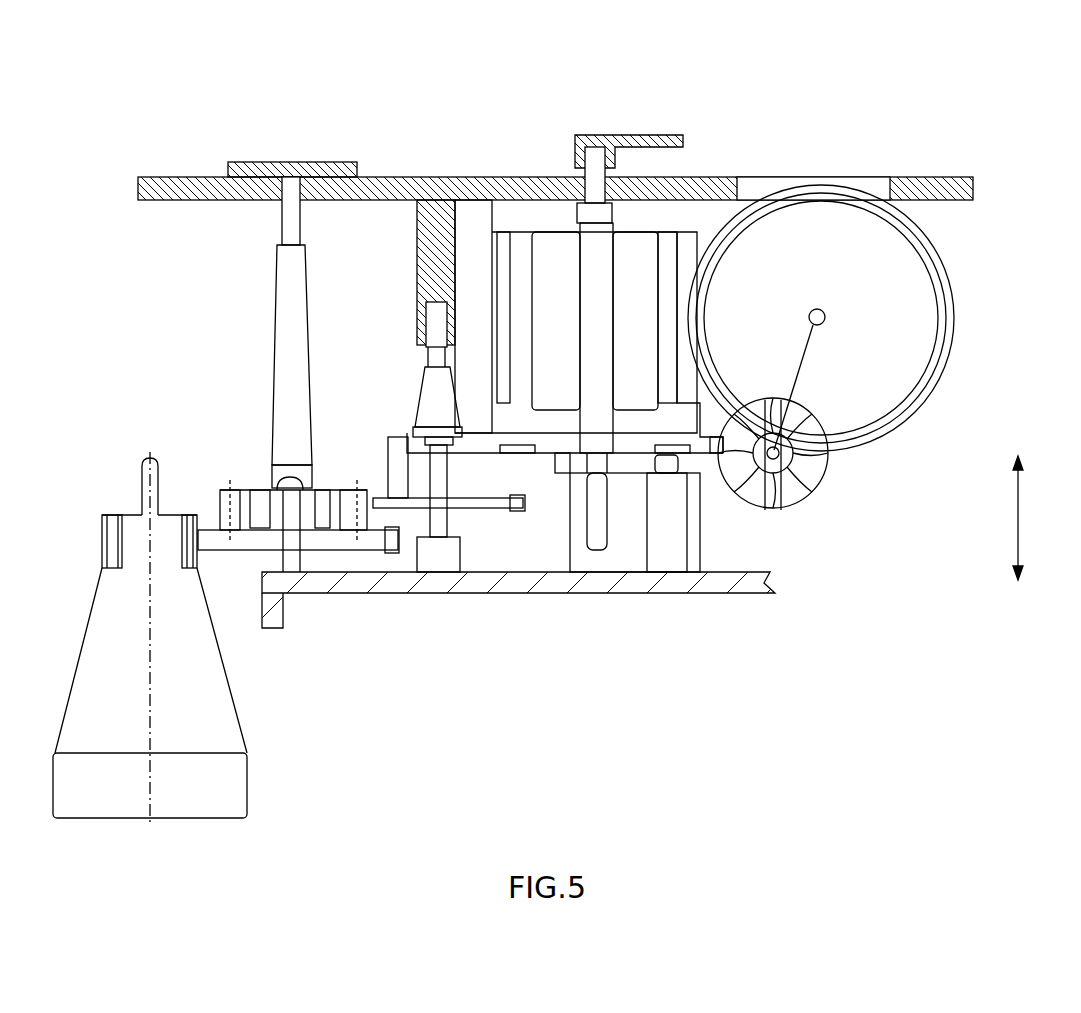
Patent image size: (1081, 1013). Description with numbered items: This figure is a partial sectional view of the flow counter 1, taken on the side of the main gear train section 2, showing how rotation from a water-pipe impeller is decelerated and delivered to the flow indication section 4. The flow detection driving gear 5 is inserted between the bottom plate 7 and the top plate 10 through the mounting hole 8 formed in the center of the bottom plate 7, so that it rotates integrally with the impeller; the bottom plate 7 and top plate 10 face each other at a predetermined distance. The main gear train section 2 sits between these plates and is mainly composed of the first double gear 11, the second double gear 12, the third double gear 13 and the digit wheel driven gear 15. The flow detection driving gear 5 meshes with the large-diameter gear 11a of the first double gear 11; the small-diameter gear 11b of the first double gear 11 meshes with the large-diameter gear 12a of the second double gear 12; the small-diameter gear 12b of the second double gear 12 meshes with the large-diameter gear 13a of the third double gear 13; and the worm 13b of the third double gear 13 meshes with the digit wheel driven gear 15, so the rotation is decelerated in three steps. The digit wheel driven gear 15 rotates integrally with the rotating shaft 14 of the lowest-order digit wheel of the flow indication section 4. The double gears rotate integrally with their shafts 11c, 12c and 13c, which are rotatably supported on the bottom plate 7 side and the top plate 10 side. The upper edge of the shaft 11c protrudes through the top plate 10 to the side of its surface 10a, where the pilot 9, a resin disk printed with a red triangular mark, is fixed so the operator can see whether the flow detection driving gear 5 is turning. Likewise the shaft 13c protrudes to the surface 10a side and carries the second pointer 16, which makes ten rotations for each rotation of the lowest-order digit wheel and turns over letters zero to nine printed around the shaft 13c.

The flow counter 1 is at (900, 150).
The main gear train section 2 is at (258, 410).
The flow indication section 4 is at (813, 178).
The flow detection driving gear 5 is at (105, 515).
The bottom plate 7 is at (462, 590).
The mounting hole 8 is at (258, 615).
The pilot 9 is at (325, 162).
The top plate 10 is at (530, 129).
The surface of top plate 10a is at (150, 176).
The first double gear 11 is at (330, 556).
The large-diameter gear of first double gear 11a is at (393, 532).
The small-diameter gear of first double gear 11b is at (236, 490).
The shaft of first double gear 11c is at (283, 215).
The second double gear 12 is at (483, 517).
The large-diameter gear of second double gear 12a is at (370, 497).
The small-diameter gear of second double gear 12b is at (392, 440).
The shaft of second double gear 12c is at (420, 352).
The third double gear 13 is at (697, 453).
The large-diameter gear of third double gear 13a is at (548, 478).
The worm 13b is at (488, 228).
The shaft of third double gear 13c is at (583, 205).
The rotating shaft 14 is at (826, 317).
The digit wheel driven gear 15 is at (945, 270).
The second pointer 16 is at (636, 135).